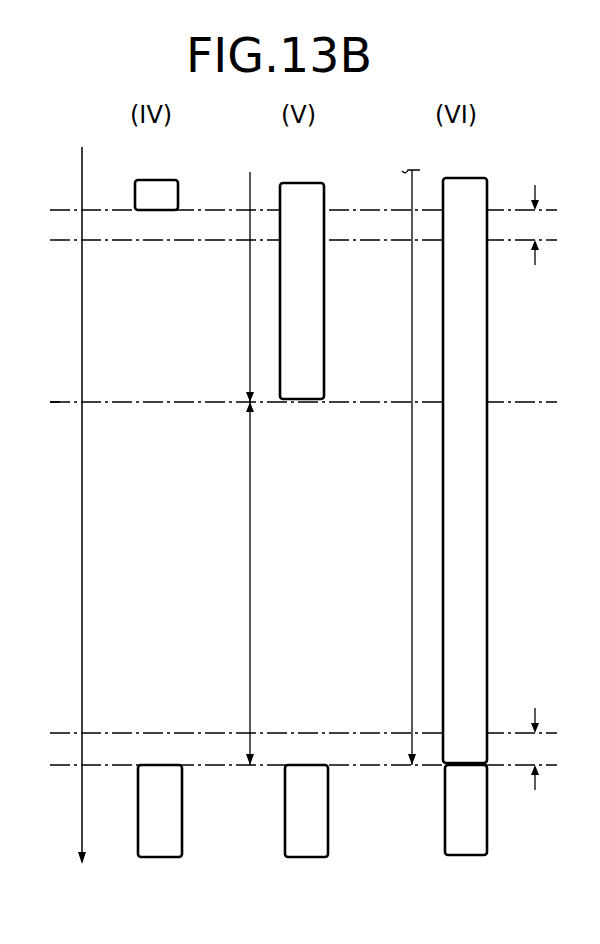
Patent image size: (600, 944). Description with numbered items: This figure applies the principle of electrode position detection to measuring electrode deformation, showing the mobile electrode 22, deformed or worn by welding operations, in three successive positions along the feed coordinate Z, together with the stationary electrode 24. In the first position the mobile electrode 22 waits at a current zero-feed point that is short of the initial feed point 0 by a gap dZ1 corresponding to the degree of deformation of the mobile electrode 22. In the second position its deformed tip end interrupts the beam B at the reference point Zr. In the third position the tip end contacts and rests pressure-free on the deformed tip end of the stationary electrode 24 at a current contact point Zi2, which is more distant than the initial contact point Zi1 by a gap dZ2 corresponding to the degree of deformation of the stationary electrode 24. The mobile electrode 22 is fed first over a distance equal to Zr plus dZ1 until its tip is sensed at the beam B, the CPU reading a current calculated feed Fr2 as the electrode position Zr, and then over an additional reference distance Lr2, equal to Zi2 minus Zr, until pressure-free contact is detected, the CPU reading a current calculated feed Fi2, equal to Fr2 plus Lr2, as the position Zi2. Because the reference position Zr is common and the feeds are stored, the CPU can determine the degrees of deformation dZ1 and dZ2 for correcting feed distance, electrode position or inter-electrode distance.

The mobile electrode 22 is at (179, 196).
The stationary electrode 24 is at (183, 806).
The electrode position coordinate Z is at (83, 523).
The gap corresponding to deformation of mobile electrode dZ1 is at (81, 210).
The gap corresponding to deformation of stationary electrode dZ2 is at (544, 765).
The initial feed point 0 is at (80, 240).
The reference point Zr is at (81, 402).
The beam B is at (154, 402).
The initial contact point Zi1 is at (81, 733).
The current contact point Zi2 is at (81, 766).
The current calculated feed to reference point Fr2 is at (250, 322).
The reference distance Lr2 is at (250, 545).
The current calculated feed to contact point Fi2 is at (412, 562).